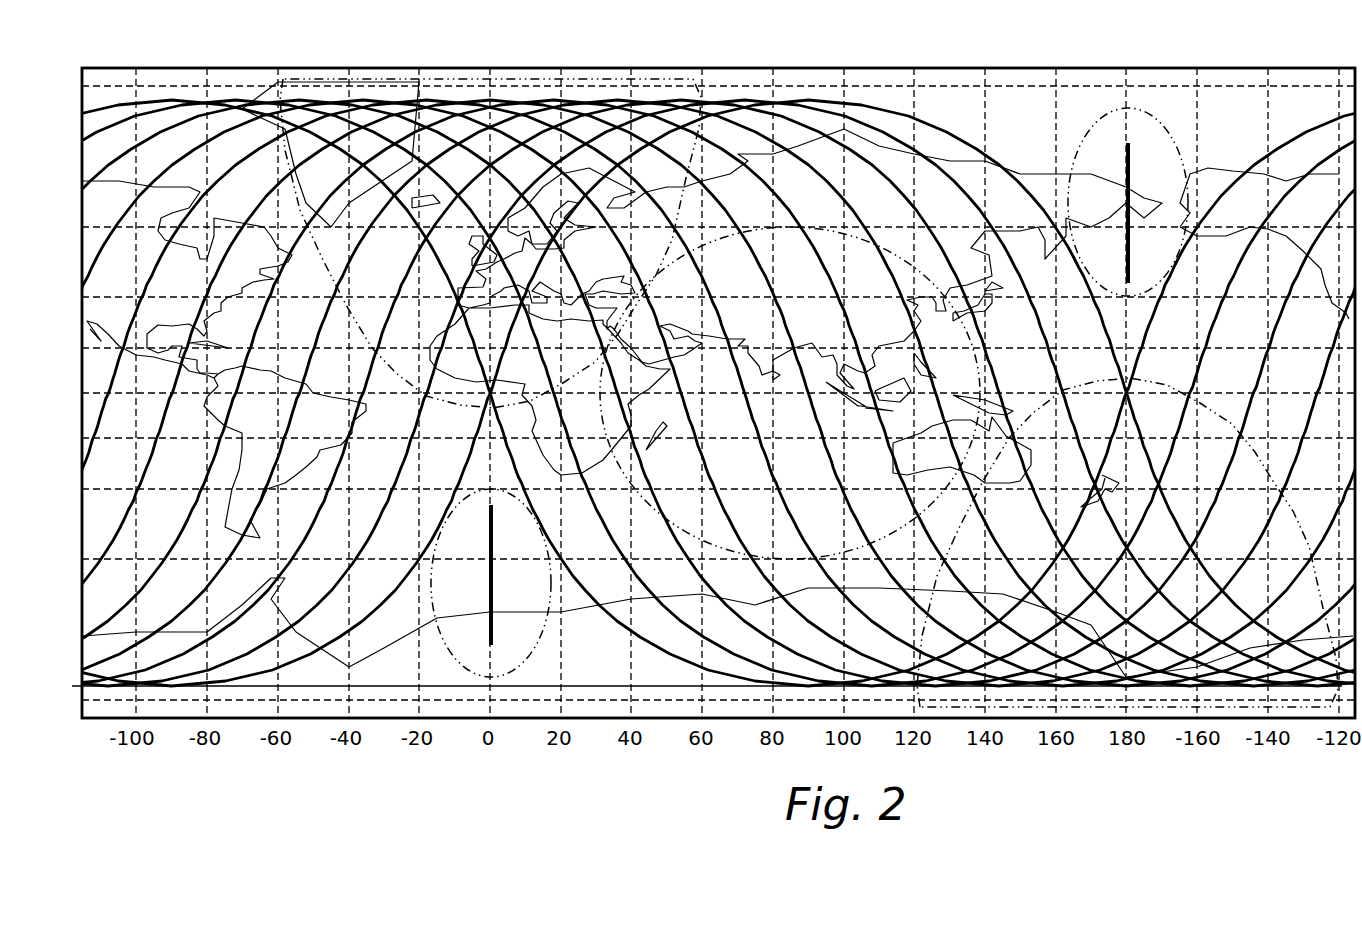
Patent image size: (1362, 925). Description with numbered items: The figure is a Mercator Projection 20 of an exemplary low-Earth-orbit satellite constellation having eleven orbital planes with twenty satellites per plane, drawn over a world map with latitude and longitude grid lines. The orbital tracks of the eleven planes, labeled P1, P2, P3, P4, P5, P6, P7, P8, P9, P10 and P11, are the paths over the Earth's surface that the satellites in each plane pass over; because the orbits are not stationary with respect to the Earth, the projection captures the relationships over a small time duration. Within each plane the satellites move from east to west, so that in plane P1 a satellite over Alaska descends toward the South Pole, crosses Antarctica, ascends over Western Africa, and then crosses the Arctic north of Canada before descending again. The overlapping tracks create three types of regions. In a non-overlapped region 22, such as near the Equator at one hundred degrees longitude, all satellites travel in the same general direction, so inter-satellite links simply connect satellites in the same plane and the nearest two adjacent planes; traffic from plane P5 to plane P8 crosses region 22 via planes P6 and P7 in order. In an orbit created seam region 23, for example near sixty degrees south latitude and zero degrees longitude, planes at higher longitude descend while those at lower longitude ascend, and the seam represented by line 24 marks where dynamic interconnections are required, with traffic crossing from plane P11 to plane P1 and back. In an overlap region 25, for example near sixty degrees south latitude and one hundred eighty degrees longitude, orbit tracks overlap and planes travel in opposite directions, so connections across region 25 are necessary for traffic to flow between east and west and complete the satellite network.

The Mercator Projection 20 is at (747, 52).
The non-overlapped region 22 is at (693, 532).
The orbit created seam region 23 is at (1090, 126).
The seam line 24 is at (1128, 160).
The overlap region 25 is at (397, 373).
The orbital plane one P1 is at (1326, 124).
The orbital plane two P2 is at (1203, 347).
The orbital plane three P3 is at (1263, 375).
The orbital plane four P4 is at (1310, 440).
The orbital plane five P5 is at (773, 480).
The orbital plane six P6 is at (826, 420).
The orbital plane seven P7 is at (857, 350).
The orbital plane eight P8 is at (920, 323).
The orbital plane nine P9 is at (983, 343).
The orbital plane ten P10 is at (1055, 340).
The orbital plane eleven P11 is at (1058, 228).